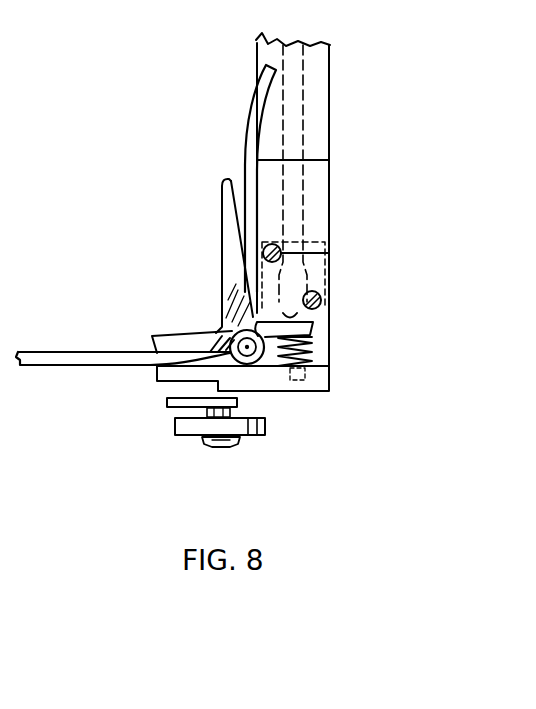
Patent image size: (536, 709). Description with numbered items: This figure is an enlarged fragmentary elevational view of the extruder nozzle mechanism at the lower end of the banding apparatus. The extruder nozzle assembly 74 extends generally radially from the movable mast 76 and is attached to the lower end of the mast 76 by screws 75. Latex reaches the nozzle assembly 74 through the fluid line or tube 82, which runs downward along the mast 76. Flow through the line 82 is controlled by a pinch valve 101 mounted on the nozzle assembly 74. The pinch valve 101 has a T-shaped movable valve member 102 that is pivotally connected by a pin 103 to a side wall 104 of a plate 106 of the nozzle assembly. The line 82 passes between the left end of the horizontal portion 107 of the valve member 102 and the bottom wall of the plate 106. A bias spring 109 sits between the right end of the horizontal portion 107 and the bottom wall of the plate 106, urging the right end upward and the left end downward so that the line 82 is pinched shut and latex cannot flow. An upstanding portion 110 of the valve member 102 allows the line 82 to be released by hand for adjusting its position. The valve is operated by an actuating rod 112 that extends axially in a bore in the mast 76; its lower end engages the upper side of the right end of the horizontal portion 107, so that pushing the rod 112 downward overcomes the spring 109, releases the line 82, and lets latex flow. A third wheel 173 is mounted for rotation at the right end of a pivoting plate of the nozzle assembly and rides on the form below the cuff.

The extruder nozzle assembly 74 is at (163, 435).
The screws 75 is at (320, 293).
The movable mast 76 is at (334, 100).
The fluid line or tube 82 is at (247, 135).
The pinch valve 101 is at (156, 228).
The T-shaped movable valve member 102 is at (221, 221).
The pin 103 is at (248, 347).
The side wall 104 is at (318, 340).
The plate 106 is at (329, 380).
The horizontal portion 107 is at (190, 332).
The bias spring 109 is at (310, 347).
The upstanding portion 110 is at (226, 203).
The actuating rod 112 is at (304, 193).
The third wheel 173 is at (248, 437).